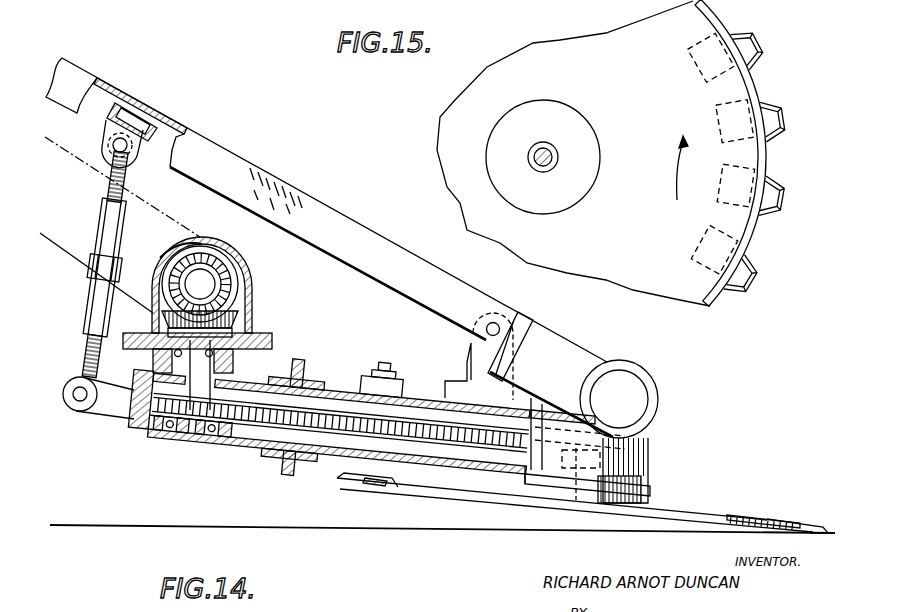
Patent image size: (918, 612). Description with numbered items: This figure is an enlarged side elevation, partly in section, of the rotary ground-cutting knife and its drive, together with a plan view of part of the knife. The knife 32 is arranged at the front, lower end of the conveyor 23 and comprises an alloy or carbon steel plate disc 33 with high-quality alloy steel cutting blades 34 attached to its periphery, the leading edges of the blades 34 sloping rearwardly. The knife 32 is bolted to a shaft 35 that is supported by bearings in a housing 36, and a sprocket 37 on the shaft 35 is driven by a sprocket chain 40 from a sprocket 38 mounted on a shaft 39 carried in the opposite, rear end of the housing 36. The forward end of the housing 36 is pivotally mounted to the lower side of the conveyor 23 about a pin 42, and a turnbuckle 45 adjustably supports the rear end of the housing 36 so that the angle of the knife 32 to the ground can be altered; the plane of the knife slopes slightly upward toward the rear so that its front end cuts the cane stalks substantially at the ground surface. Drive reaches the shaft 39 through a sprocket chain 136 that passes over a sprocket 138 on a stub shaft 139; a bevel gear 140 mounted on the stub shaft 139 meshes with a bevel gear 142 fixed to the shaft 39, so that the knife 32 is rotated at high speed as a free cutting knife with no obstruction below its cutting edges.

In FIG. 14, the conveyor 23 is at (288, 184).
In FIG. 15, the knife 32 is at (703, 96).
In FIG. 14, the knife 32 is at (478, 493).
In FIG. 15, the plate disc 33 is at (720, 160).
In FIG. 14, the plate disc 33 is at (412, 486).
In FIG. 15, the cutting blades 34 is at (745, 44).
In FIG. 14, the cutting blades 34 is at (344, 486).
In FIG. 15, the shaft 35 is at (557, 160).
In FIG. 14, the shaft 35 is at (571, 497).
In FIG. 14, the housing 36 is at (647, 440).
In FIG. 14, the sprocket 37 is at (646, 451).
In FIG. 14, the sprocket 38 is at (134, 409).
In FIG. 14, the shaft 39 is at (186, 440).
In FIG. 14, the sprocket chain 40 is at (267, 414).
In FIG. 14, the pin 42 is at (486, 333).
In FIG. 14, the adjusting rod 45 is at (92, 288).
In FIG. 14, the sprocket chain 136 is at (168, 232).
In FIG. 14, the sprocket 138 is at (176, 241).
In FIG. 14, the stub shaft 139 is at (212, 286).
In FIG. 14, the bevel gear 140 is at (228, 272).
In FIG. 14, the bevel gear 142 is at (238, 331).